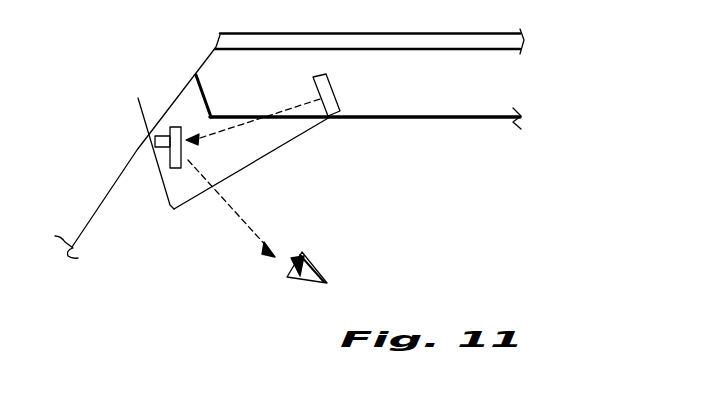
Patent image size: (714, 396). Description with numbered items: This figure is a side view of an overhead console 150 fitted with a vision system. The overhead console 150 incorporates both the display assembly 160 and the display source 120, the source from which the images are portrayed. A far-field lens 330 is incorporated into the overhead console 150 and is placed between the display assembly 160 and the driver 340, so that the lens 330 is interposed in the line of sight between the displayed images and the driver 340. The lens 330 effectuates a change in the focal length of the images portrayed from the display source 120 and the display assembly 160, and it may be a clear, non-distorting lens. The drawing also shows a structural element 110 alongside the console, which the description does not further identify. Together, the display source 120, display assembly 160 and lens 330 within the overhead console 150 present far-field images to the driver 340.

The light guide plate 110 is at (138, 98).
The display source 120 is at (334, 96).
The overhead console 150 is at (429, 117).
The display assembly 160 is at (186, 112).
The far-field lens 330 is at (265, 157).
The driver 340 is at (315, 266).